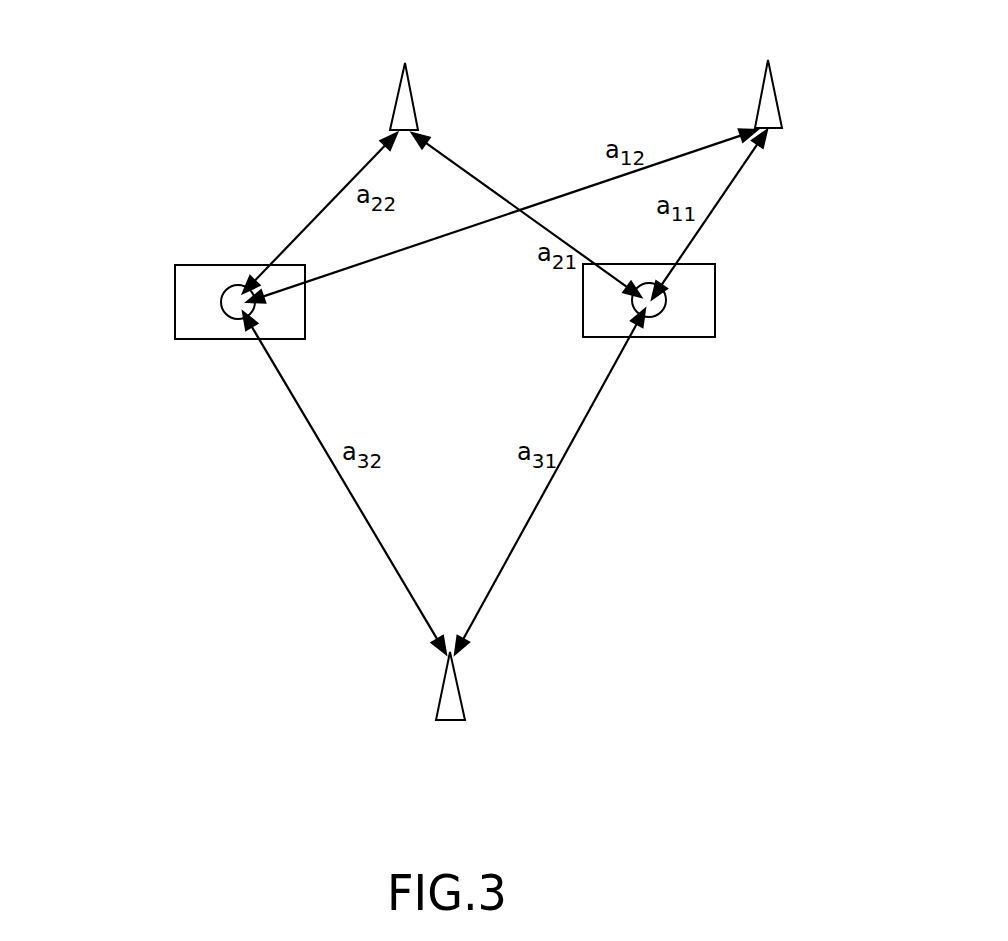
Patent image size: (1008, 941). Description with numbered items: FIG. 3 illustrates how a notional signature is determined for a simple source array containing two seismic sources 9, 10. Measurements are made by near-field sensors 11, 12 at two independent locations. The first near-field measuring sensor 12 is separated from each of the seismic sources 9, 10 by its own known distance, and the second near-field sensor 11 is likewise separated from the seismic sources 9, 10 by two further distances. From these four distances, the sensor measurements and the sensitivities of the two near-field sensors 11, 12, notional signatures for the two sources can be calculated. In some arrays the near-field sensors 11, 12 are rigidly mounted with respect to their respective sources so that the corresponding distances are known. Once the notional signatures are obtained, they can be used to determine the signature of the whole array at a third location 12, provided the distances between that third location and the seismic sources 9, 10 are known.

The seismic source 9 is at (175, 303).
The seismic source 10 is at (715, 298).
The second near-field sensor 11 is at (397, 97).
The first near-field measuring sensor 12 is at (773, 75).